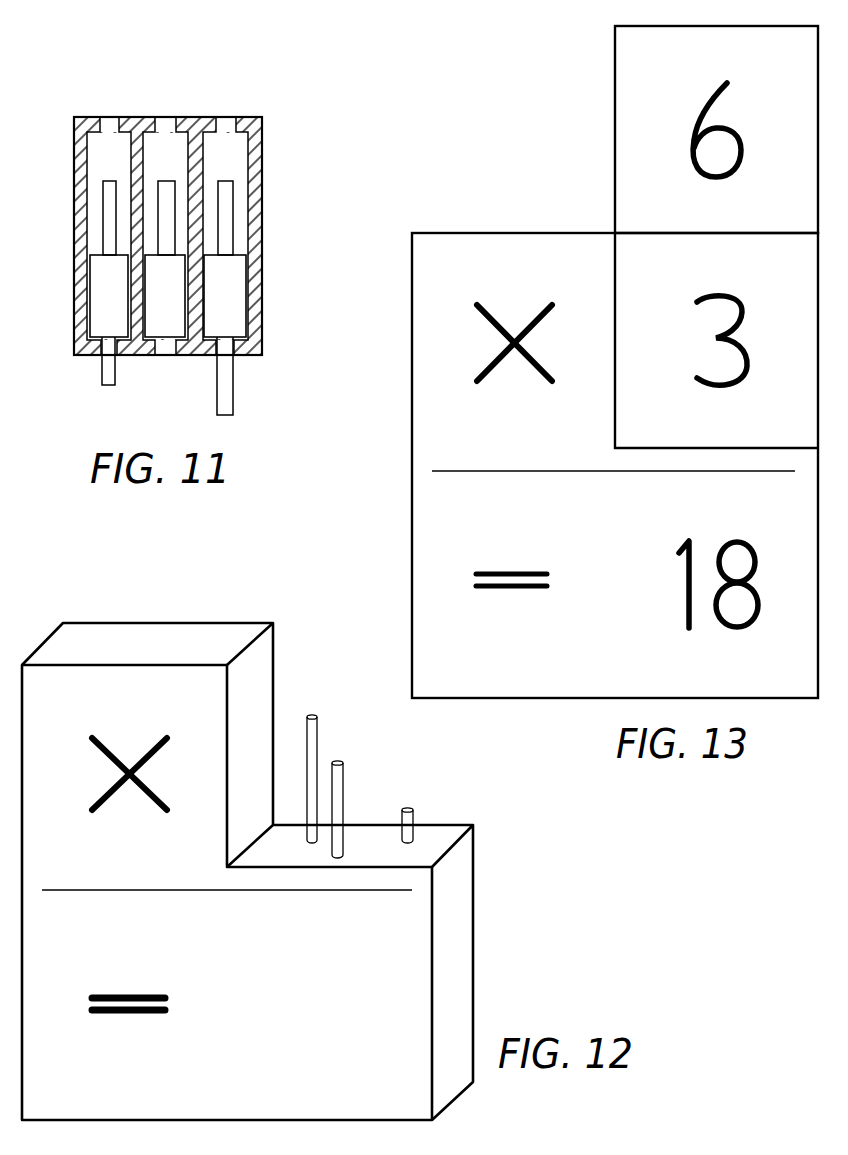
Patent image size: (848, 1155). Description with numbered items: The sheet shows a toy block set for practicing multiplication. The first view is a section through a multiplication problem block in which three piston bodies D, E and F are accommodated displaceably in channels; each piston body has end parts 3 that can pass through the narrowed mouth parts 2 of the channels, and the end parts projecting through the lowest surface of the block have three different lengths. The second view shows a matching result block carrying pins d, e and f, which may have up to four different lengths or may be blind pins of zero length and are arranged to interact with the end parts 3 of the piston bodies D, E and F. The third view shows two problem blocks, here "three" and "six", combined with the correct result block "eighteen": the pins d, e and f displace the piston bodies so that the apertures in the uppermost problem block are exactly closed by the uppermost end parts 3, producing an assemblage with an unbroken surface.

In FIG. 11, the narrowed mouth part 2 is at (232, 129).
In FIG. 11, the end part 3 is at (194, 298).
In FIG. 11, the piston body D is at (109, 283).
In FIG. 11, the piston body E is at (165, 259).
In FIG. 11, the piston body F is at (227, 217).
In FIG. 12, the pin d is at (312, 767).
In FIG. 12, the pin e is at (338, 798).
In FIG. 12, the pin f is at (407, 812).